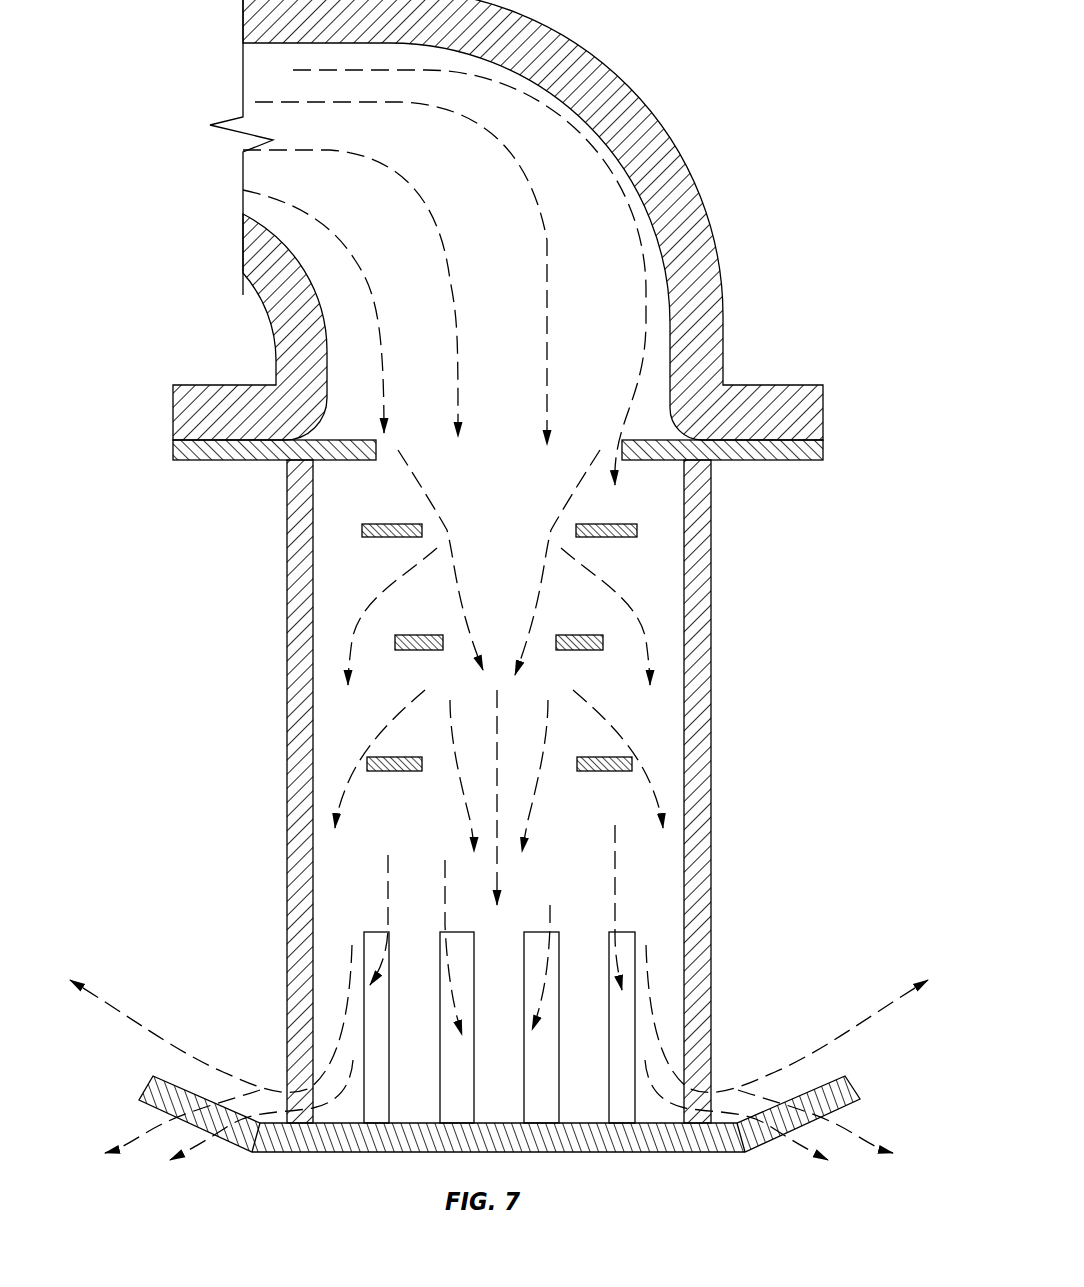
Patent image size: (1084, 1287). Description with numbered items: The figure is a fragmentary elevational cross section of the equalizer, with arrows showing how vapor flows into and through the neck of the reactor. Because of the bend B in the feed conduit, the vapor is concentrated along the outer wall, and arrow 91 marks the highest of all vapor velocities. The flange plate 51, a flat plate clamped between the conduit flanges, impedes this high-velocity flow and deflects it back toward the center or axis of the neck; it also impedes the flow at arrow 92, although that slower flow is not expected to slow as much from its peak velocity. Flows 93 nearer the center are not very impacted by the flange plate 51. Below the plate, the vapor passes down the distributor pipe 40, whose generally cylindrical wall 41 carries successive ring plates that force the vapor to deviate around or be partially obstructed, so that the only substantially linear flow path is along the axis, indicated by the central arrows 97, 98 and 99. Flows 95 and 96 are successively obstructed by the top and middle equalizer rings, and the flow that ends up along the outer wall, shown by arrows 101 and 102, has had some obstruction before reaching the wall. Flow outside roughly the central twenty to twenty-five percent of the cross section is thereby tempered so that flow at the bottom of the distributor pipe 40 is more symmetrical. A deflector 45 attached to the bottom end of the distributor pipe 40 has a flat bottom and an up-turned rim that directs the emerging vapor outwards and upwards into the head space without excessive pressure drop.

The distributor pipe 40 is at (566, 791).
The generally cylindrical wall 41 is at (711, 762).
The deflector 45 is at (245, 1158).
The flange plate 51 is at (228, 440).
The arrow showing highest vapor velocity flow 91 is at (647, 322).
The arrow showing slower flow 92 is at (372, 290).
The flows nearer the center 93 is at (373, 168).
The flow obstructed by equalizer rings 95 is at (568, 505).
The flow obstructed by equalizer rings 96 is at (437, 513).
The flow path 97 is at (500, 862).
The flow path 98 is at (543, 760).
The flow path 99 is at (452, 720).
The arrow showing flow along outer wall 101 is at (380, 728).
The arrow showing flow along outer wall 102 is at (607, 720).
The bend B is at (493, 192).